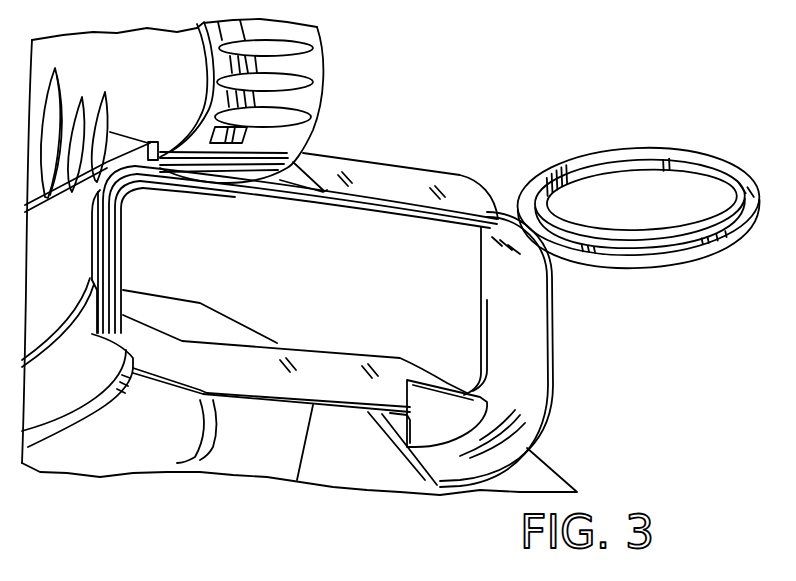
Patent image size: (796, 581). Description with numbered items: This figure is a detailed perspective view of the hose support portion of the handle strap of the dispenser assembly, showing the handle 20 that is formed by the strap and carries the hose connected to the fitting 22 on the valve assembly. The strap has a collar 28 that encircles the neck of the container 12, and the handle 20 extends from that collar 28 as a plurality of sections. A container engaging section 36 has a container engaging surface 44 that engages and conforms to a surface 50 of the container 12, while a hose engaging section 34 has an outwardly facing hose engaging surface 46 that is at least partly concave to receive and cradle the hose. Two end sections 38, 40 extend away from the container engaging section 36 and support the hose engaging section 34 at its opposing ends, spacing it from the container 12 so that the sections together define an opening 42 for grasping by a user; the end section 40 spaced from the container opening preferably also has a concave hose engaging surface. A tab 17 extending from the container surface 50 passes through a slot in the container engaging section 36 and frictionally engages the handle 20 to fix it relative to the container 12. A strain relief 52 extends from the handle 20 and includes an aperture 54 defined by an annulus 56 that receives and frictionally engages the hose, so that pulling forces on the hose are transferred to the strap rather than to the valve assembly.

The container 12 is at (543, 463).
The tab 17 is at (442, 383).
The handle 20 is at (566, 290).
The fitting 22 is at (327, 67).
The collar 28 is at (105, 410).
The hose engaging section 34 is at (357, 207).
The container engaging section 36 is at (327, 363).
The end section 38 is at (125, 243).
The end section 40 is at (550, 333).
The opening 42 is at (322, 311).
The container engaging surface 44 is at (297, 480).
The hose engaging surface 46 is at (404, 180).
The container surface 50 is at (250, 433).
The strain relief 52 is at (639, 201).
The aperture 54 is at (643, 190).
The annulus 56 is at (745, 225).